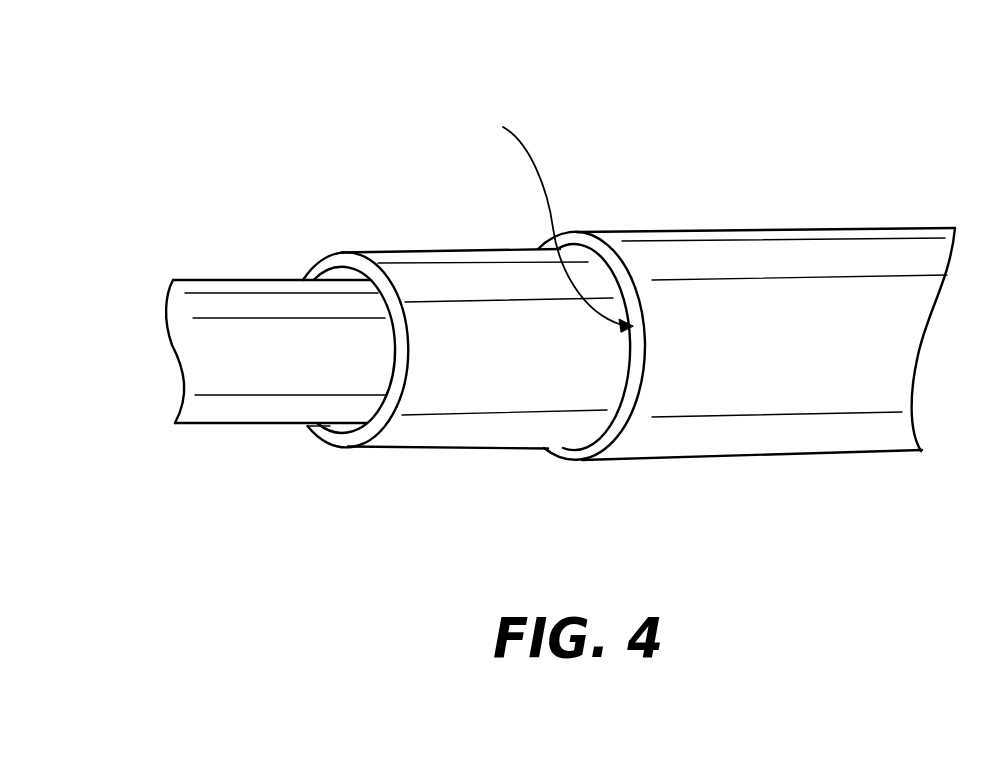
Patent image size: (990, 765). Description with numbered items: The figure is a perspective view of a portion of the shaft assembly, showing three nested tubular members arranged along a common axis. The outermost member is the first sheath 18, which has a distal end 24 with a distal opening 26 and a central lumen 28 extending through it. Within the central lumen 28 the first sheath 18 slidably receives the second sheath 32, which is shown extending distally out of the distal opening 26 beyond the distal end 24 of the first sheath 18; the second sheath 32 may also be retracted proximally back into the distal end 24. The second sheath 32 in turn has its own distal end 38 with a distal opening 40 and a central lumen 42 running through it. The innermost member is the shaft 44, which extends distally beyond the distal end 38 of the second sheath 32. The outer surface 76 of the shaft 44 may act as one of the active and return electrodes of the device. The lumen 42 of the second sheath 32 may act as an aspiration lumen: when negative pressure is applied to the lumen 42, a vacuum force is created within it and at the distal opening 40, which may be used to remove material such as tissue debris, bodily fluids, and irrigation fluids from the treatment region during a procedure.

The first sheath 18 is at (703, 230).
The distal end 24 is at (568, 232).
The distal opening 26 is at (624, 389).
The central lumen 28 is at (553, 216).
The second sheath 32 is at (447, 250).
The distal end 38 is at (343, 253).
The distal opening 40 is at (338, 437).
The central lumen 42 is at (317, 423).
The shaft 44 is at (243, 280).
The outer surface 76 is at (243, 416).